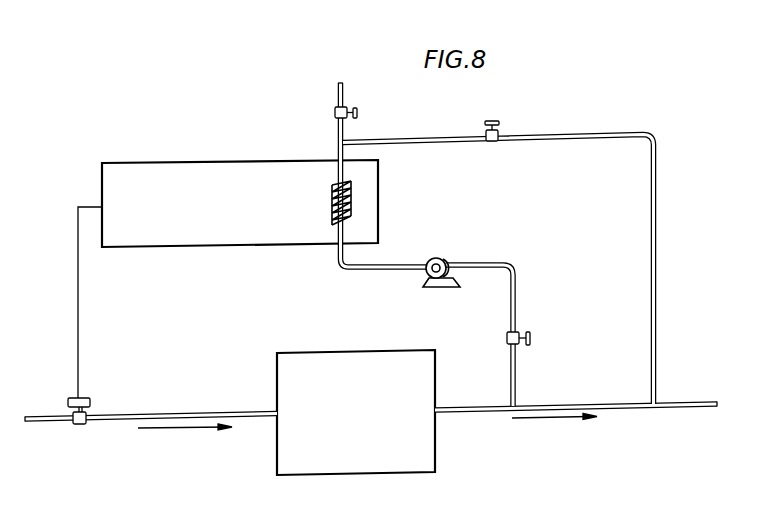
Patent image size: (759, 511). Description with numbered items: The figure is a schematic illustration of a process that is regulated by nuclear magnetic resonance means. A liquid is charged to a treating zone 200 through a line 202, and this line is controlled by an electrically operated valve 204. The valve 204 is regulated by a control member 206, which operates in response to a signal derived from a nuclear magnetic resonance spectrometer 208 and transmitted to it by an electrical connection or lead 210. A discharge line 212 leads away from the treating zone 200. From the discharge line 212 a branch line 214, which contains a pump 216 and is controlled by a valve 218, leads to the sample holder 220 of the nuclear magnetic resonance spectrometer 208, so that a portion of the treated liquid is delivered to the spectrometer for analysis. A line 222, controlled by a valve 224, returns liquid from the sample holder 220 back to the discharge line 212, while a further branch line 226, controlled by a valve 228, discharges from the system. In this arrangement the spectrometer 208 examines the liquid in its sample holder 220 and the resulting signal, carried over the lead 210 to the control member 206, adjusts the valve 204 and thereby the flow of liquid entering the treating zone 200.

The treating zone 200 is at (355, 358).
The line 202 is at (152, 413).
The electrically operated valve 204 is at (78, 423).
The control member 206 is at (83, 401).
The nuclear magnetic resonance spectrometer 208 is at (208, 163).
The electrical connection or lead 210 is at (78, 326).
The discharge line 212 is at (620, 403).
The branch line 214 is at (516, 298).
The pump 216 is at (447, 261).
The valve 218 is at (506, 338).
The sample holder 220 is at (352, 206).
The line 222 is at (656, 199).
The valve 224 is at (497, 143).
The branch line 226 is at (337, 93).
The valve 228 is at (334, 112).